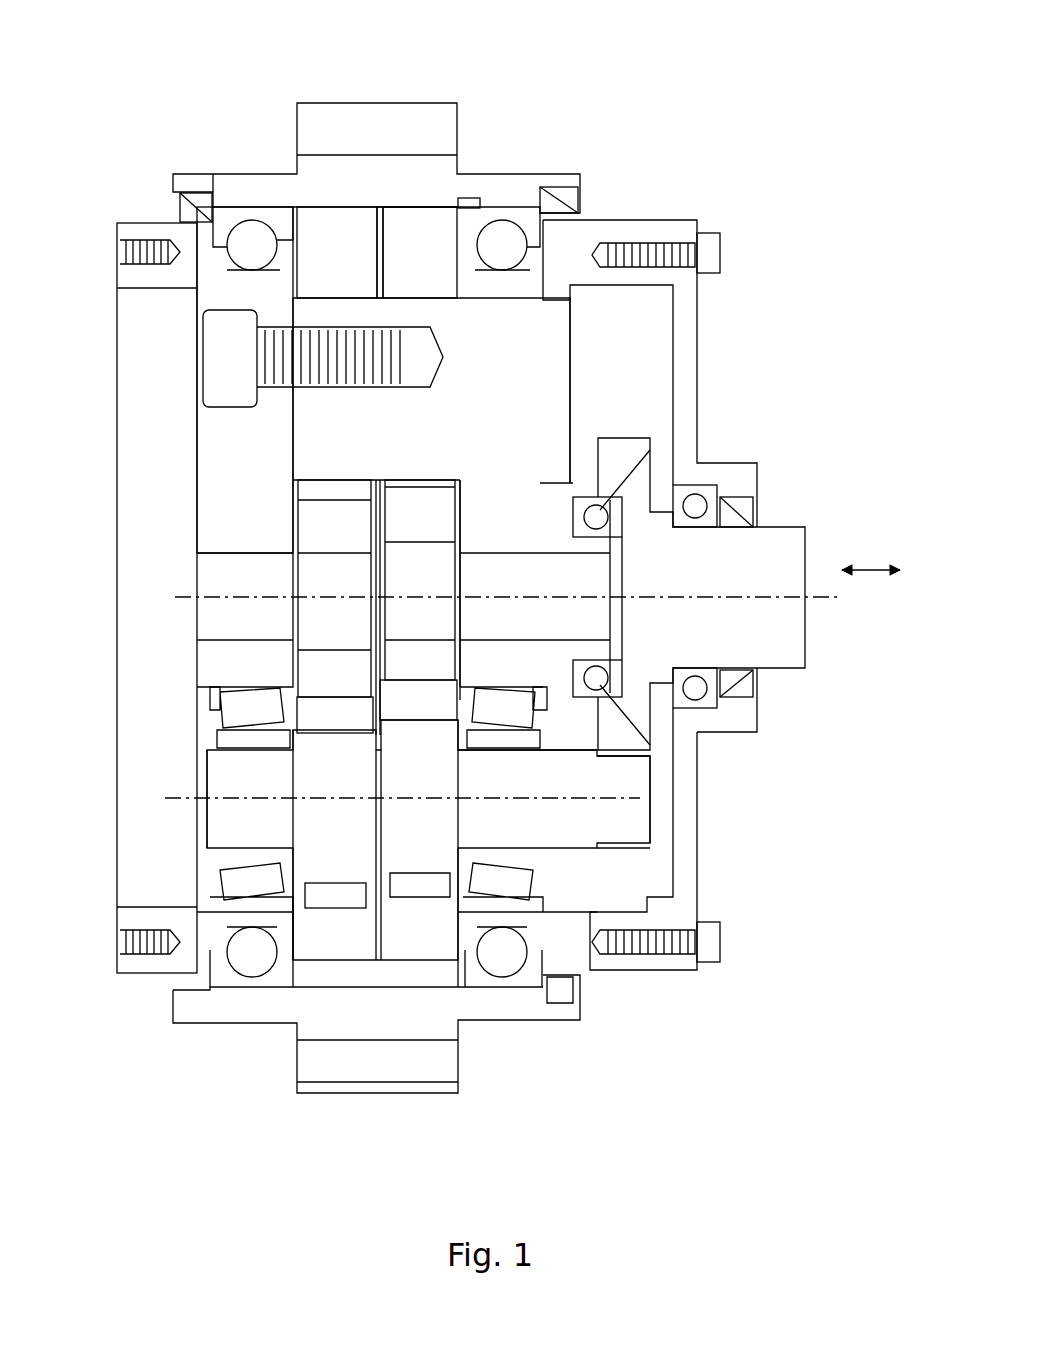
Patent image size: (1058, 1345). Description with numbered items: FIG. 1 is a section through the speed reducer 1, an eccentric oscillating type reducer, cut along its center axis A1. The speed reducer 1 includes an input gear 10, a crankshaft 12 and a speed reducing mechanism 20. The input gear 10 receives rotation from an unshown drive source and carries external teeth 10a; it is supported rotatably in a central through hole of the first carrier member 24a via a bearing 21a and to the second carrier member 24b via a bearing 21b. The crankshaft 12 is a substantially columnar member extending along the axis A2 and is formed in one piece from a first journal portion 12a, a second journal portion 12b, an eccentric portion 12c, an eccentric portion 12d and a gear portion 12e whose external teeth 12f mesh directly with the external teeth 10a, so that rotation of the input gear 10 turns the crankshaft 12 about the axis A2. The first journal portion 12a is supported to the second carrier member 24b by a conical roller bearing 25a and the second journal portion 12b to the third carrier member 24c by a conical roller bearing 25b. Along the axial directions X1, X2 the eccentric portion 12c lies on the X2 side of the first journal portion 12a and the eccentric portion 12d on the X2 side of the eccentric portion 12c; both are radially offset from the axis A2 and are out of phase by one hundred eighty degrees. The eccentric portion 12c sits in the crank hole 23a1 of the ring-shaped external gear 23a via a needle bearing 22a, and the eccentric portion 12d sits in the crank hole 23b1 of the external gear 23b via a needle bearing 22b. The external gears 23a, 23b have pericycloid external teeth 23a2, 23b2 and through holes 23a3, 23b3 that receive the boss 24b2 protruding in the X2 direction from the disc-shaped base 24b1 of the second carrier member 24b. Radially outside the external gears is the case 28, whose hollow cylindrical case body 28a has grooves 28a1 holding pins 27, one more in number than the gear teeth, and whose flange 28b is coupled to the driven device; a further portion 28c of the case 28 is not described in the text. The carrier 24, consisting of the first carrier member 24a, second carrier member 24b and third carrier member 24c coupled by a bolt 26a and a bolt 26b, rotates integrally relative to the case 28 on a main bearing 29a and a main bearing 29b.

The speed reducer 1 is at (724, 136).
The input gear 10 is at (782, 555).
The external teeth 10a is at (635, 450).
The crankshaft 12 is at (582, 858).
The first journal portion 12a is at (575, 782).
The second journal portion 12b is at (240, 818).
The eccentric portion 12c is at (428, 985).
The eccentric portion 12d is at (330, 987).
The gear portion 12e is at (648, 818).
The external teeth 12f is at (650, 842).
The speed reducing mechanism 20 is at (224, 146).
The bearing 21a is at (712, 485).
The bearing 21b is at (574, 506).
The needle bearing 22a is at (460, 992).
The needle bearing 22b is at (300, 992).
The external gear 23a is at (422, 568).
The crank hole 23a1 is at (425, 688).
The external teeth 23a2 is at (432, 205).
The through hole 23a3 is at (476, 206).
The external gear 23b is at (330, 568).
The crank hole 23b1 is at (342, 700).
The external teeth 23b2 is at (345, 985).
The through hole 23b3 is at (325, 225).
The carrier 24 is at (121, 220).
The first carrier member 24a is at (700, 350).
The second carrier member 24b is at (545, 350).
The base 24b1 is at (535, 425).
The boss 24b2 is at (325, 440).
The third carrier member 24c is at (225, 470).
The conical roller bearing 25a is at (545, 912).
The conical roller bearing 25b is at (238, 880).
The bolt 26a is at (722, 248).
The bolt 26b is at (212, 356).
The pin 27 is at (378, 210).
The case 28 is at (399, 98).
The case body 28a is at (258, 186).
The groove 28a1 is at (412, 200).
The flange 28b is at (352, 200).
The lower cover hub 28c is at (383, 1085).
The main bearing 29a is at (512, 236).
The main bearing 29b is at (246, 232).
The center axis A1 is at (836, 602).
The axis A2 is at (186, 798).
The axial direction X1 is at (887, 550).
The X2 direction X2 is at (828, 550).